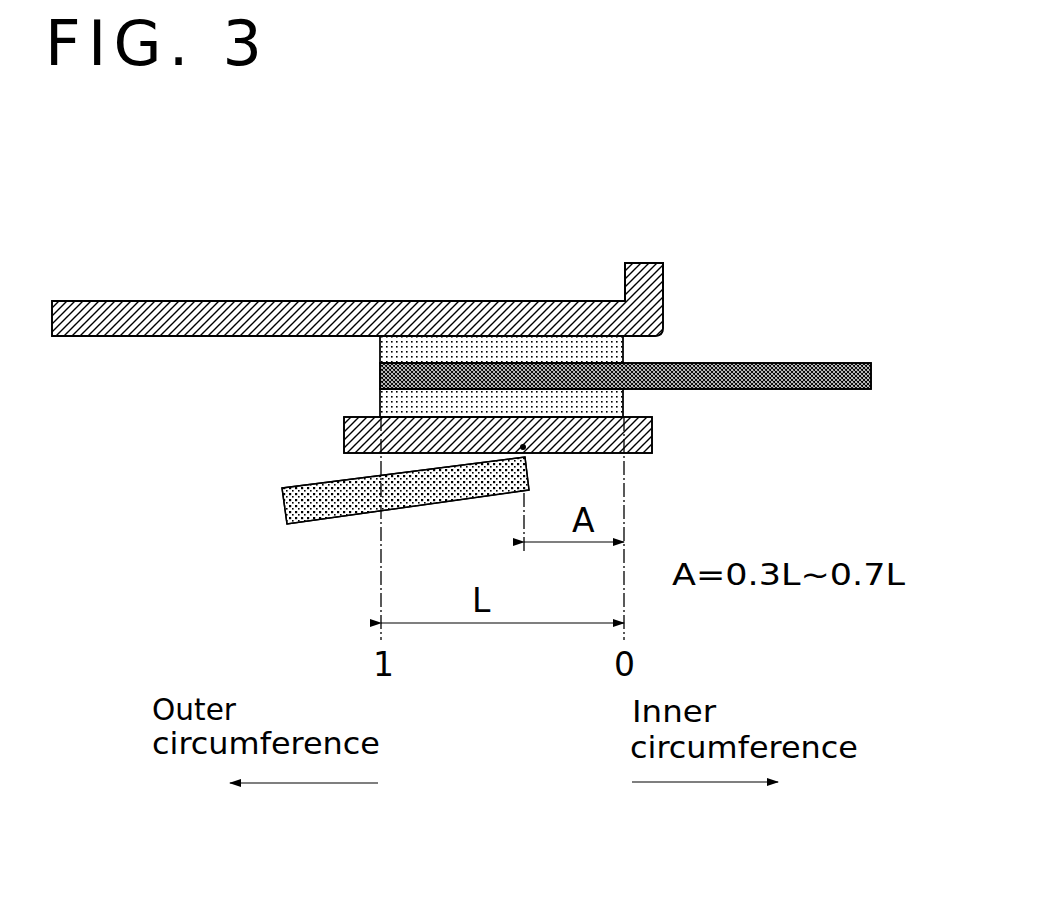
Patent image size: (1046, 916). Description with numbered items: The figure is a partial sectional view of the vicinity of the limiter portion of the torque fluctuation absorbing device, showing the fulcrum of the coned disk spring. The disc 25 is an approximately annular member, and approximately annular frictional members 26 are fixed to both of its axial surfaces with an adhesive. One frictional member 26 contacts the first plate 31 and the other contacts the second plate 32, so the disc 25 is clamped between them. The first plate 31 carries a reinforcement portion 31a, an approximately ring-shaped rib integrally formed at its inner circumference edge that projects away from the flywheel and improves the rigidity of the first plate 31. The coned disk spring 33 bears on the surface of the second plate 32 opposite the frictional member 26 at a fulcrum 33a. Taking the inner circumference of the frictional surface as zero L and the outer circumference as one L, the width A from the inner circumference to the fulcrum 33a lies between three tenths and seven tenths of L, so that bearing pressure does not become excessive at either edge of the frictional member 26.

The first plate 31 is at (225, 300).
The reinforcement portion 31a is at (648, 268).
The frictional member 26 is at (623, 349).
The disc 25 is at (812, 376).
The second plate 32 is at (344, 428).
The coned disk spring 33 is at (292, 508).
The fulcrum of the coned disk spring 33a is at (522, 443).